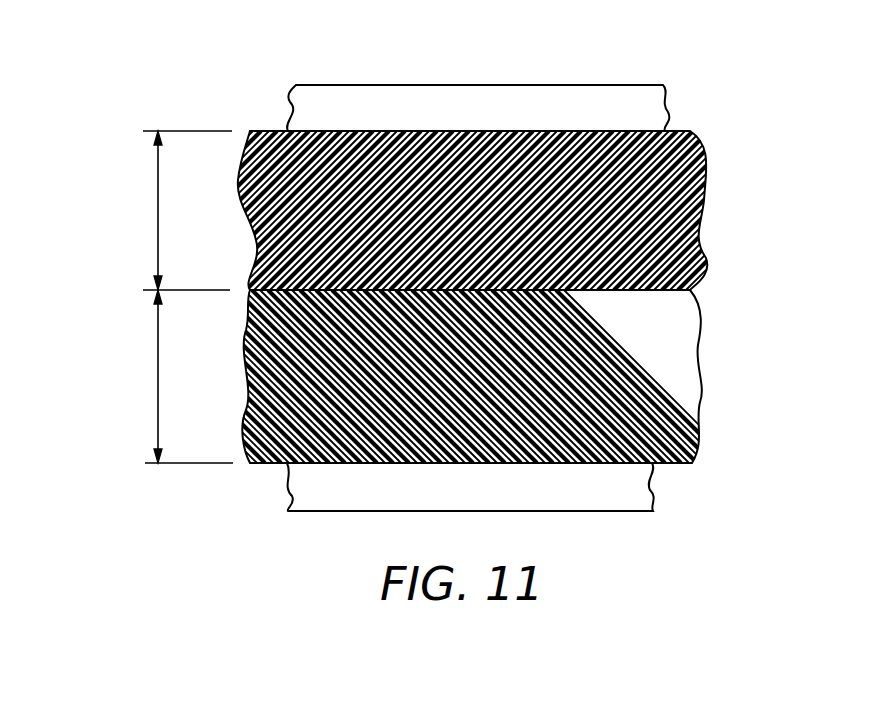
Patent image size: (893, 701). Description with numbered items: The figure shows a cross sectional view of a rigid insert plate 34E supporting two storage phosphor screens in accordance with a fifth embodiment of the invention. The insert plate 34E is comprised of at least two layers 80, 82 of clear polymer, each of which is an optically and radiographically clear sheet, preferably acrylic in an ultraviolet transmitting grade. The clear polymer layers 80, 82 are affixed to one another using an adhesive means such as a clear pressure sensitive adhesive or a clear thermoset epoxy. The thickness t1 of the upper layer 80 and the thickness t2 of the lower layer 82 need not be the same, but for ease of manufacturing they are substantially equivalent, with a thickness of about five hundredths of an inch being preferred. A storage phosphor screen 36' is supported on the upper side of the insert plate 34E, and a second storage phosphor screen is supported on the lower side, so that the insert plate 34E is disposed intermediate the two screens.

The storage phosphor screen 36' is at (478, 69).
The clear polymer layer 80 is at (696, 186).
The clear polymer layer 82 is at (692, 351).
The insert plate 34E is at (112, 133).
The thickness of first layer t1 is at (158, 223).
The thickness of second layer t2 is at (157, 364).